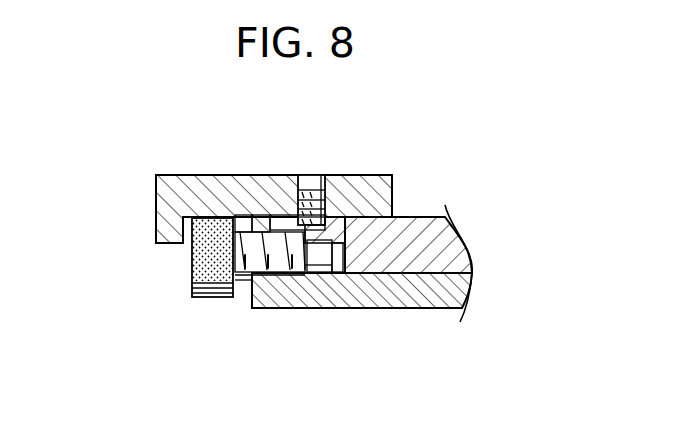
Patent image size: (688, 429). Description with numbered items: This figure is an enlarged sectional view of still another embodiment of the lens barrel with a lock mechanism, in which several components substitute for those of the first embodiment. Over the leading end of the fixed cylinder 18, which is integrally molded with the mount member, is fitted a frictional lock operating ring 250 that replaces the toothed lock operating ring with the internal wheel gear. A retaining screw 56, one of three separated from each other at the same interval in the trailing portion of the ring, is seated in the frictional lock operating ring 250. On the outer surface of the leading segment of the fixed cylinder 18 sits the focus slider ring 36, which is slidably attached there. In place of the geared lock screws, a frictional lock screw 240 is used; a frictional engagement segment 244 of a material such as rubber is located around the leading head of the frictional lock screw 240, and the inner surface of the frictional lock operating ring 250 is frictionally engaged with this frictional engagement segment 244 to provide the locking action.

The frictional lock operating ring 250 is at (187, 190).
The retaining screw 56 is at (307, 187).
The focus slider ring 36 is at (437, 252).
The fixed cylinder 18 is at (375, 290).
The frictional lock screw 240 is at (155, 299).
The frictional engagement segment 244 is at (218, 277).